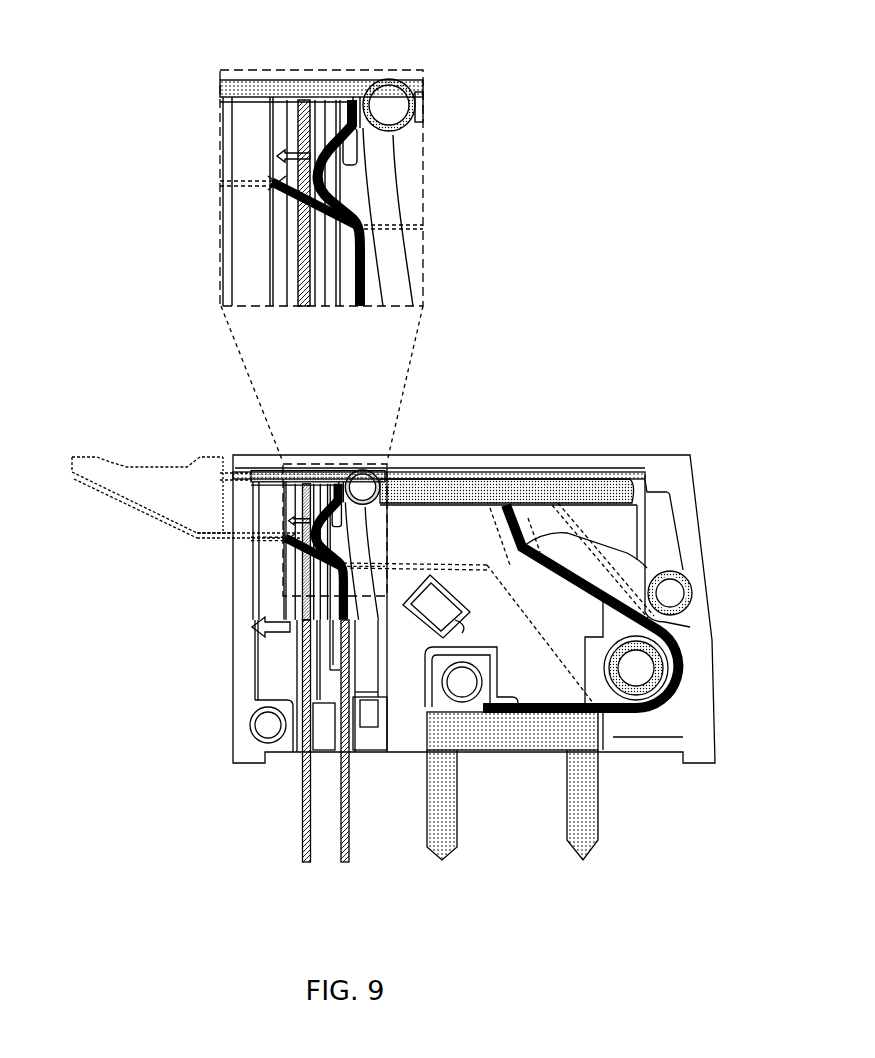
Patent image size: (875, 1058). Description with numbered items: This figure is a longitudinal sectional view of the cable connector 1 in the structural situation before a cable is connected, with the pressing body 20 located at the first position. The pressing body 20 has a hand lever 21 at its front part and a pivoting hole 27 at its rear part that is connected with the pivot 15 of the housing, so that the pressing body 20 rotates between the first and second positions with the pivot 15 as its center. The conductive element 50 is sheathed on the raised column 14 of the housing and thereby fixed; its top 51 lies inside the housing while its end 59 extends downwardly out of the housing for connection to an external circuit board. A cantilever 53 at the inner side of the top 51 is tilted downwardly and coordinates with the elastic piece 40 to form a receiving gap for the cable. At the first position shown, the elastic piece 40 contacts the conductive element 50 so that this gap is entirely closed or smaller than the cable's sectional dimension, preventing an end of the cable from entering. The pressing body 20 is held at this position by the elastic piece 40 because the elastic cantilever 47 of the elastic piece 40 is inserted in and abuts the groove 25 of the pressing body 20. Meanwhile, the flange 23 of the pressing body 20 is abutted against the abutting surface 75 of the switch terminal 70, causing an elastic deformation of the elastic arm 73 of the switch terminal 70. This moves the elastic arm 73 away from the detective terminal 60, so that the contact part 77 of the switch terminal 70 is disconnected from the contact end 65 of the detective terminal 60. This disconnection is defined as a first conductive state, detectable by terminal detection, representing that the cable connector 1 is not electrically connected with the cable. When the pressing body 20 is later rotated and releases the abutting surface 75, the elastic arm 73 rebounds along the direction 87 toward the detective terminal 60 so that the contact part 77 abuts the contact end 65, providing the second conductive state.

The cable connector 1 is at (120, 454).
The raised column 14 is at (490, 740).
The pivot 15 is at (633, 678).
The pressing body 20 is at (139, 497).
The hand lever 21 is at (163, 495).
The flange 23 is at (273, 183).
The groove 25 is at (638, 603).
The pivoting hole 27 is at (691, 668).
The elastic piece 40 is at (690, 628).
The elastic cantilever 47 is at (575, 540).
The conductive element 50 is at (507, 439).
The top 51 is at (470, 500).
The cantilever 53 is at (528, 510).
The end 59 is at (588, 808).
The detective terminal 60 is at (303, 802).
The contact end 65 is at (297, 99).
The switch terminal 70 is at (347, 800).
The elastic arm 73 is at (348, 640).
The abutting surface 75 is at (398, 151).
The contact part 77 is at (358, 99).
The direction 87 is at (262, 621).